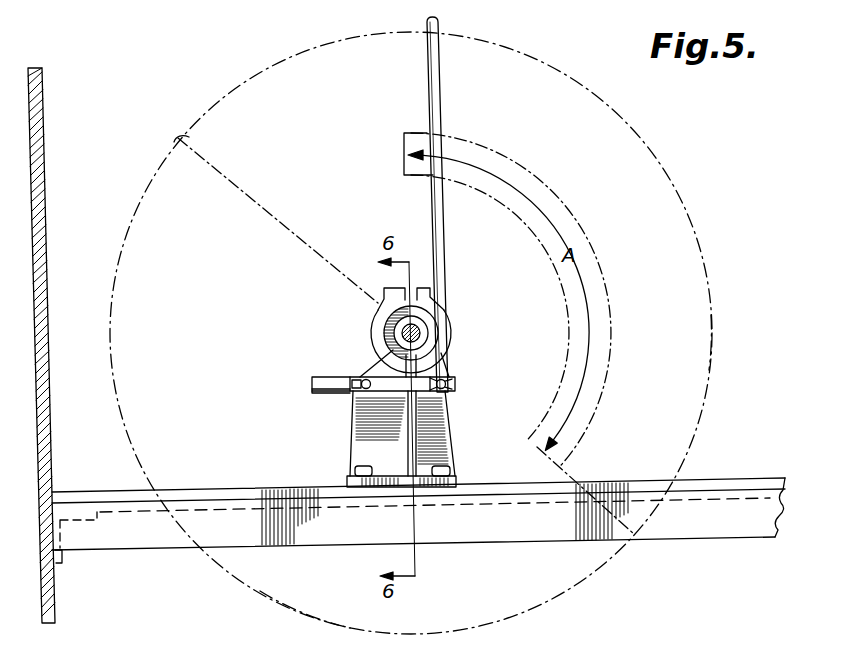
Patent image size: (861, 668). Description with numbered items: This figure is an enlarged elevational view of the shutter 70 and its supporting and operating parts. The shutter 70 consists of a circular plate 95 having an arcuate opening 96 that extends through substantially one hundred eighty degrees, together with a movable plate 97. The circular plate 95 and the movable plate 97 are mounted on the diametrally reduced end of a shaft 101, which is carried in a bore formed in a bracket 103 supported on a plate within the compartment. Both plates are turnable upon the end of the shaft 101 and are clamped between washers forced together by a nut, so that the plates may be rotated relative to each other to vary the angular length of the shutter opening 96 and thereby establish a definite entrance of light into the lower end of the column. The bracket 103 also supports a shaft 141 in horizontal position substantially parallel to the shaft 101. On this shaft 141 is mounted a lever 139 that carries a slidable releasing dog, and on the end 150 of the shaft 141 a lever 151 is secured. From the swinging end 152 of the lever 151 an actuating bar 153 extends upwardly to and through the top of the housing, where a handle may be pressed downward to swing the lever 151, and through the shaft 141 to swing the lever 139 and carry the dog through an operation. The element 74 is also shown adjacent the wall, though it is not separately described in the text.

The shutter 70 is at (706, 358).
The wall bracket 74 is at (63, 558).
The circular plate 95 is at (648, 185).
The arcuate opening 96 is at (533, 181).
The movable plate 97 is at (258, 576).
The shaft 101 is at (428, 323).
The bracket 103 is at (449, 434).
The lever 139 is at (318, 386).
The shaft 141 is at (360, 394).
The end of shaft 150 is at (360, 376).
The lever 151 is at (440, 394).
The swinging end of lever 152 is at (456, 384).
The actuating bar 153 is at (441, 262).